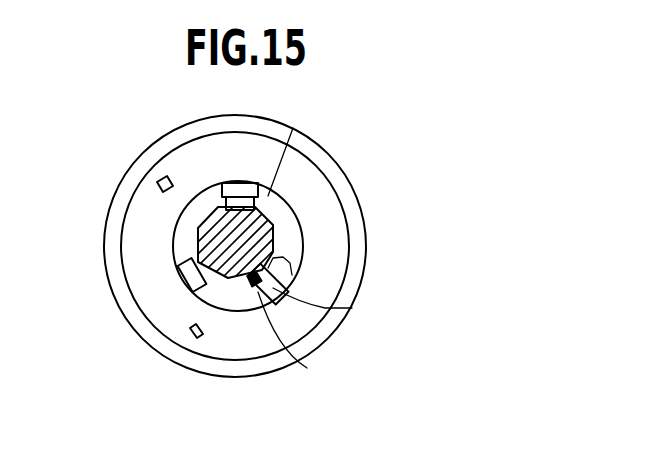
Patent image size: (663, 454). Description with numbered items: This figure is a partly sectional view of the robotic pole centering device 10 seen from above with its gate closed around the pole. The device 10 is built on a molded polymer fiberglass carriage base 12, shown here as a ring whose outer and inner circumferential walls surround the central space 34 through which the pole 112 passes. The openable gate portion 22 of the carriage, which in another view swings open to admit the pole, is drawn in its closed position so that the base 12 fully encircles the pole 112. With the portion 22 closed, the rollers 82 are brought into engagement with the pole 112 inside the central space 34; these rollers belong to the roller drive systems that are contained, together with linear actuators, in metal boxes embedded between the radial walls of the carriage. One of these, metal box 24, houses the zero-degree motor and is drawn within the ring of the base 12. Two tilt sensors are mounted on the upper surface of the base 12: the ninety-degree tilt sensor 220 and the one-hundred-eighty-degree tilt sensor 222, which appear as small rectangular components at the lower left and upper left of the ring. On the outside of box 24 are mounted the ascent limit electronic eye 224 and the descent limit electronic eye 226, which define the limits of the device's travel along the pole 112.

The robotic pole centering device 10 is at (90, 251).
The carriage base 12 is at (90, 190).
The openable gate portion 22 is at (355, 243).
The metal box 24 is at (350, 300).
The central space 34 is at (287, 226).
The rollers 82 is at (262, 197).
The pole 112 is at (223, 240).
The 90° tilt sensor 220 is at (190, 338).
The 180° tilt sensor 222 is at (164, 180).
The ascent limit electronic eye 224 is at (290, 262).
The descent limit electronic eye 226 is at (314, 345).